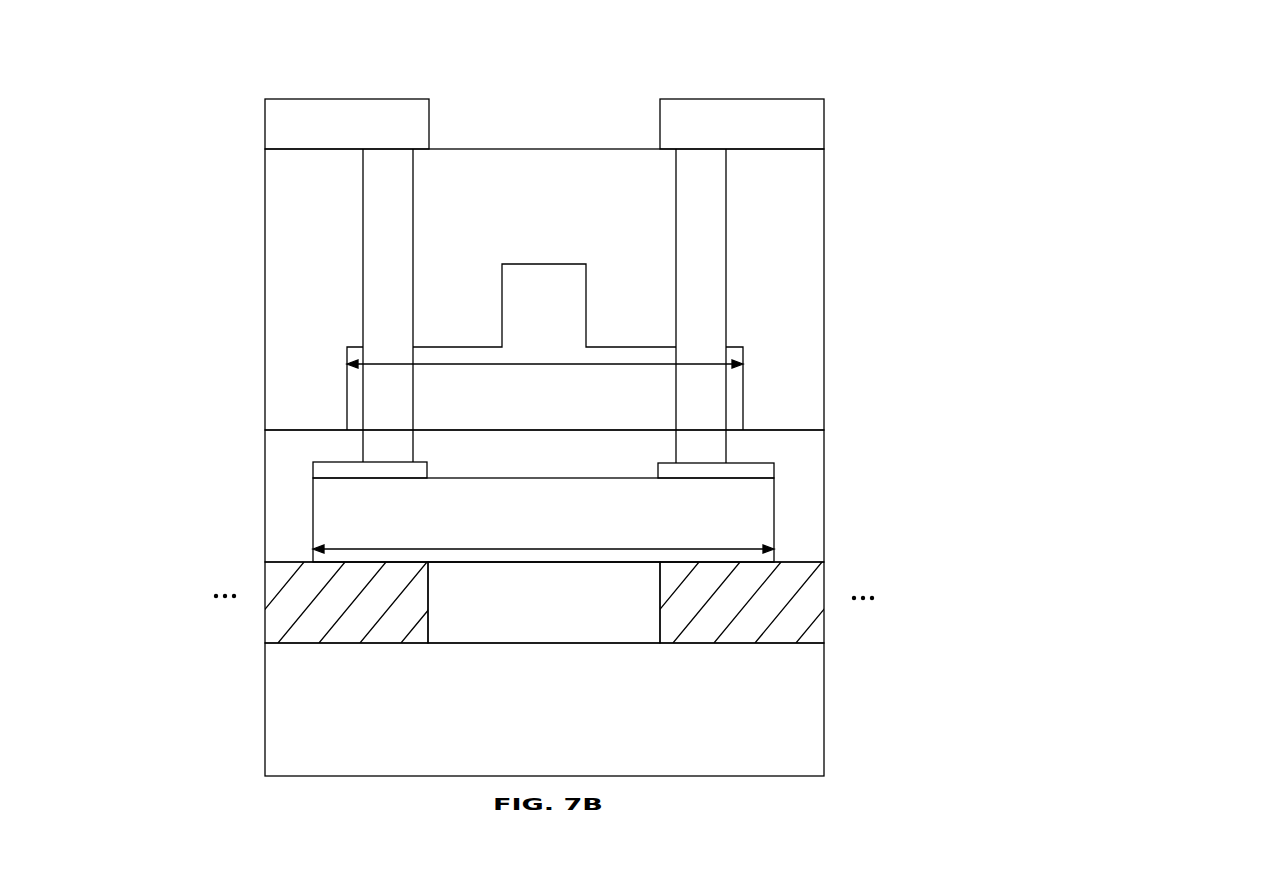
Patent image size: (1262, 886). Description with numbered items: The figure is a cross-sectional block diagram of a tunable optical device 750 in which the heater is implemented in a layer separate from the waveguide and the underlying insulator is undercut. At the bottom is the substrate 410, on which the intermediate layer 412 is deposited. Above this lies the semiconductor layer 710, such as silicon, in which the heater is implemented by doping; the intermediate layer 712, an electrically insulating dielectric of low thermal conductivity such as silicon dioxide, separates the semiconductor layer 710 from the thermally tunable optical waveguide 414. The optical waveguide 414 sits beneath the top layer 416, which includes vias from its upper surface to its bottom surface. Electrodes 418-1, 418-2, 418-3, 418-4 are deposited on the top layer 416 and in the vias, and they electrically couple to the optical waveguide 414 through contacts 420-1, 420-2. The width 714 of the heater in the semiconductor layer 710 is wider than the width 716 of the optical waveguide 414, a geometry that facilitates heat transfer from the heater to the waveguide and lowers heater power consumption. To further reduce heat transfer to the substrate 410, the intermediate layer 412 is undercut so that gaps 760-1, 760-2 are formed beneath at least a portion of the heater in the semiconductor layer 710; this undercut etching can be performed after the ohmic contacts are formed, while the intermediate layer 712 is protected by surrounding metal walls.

The tunable optical device 750 is at (1095, 80).
The top layer 416 is at (535, 226).
The electrode 418-1 is at (727, 118).
The electrode 418-2 is at (700, 245).
The electrode 418-3 is at (364, 118).
The electrode 418-4 is at (388, 245).
The contact 420-1 is at (700, 468).
The contact 420-2 is at (395, 472).
The optical waveguide 414 is at (550, 386).
The width of the optical waveguide 716 is at (610, 366).
The intermediate layer 712 is at (510, 453).
The semiconductor layer 710 is at (530, 538).
The width of the heater 714 is at (662, 548).
The intermediate layer 412 is at (530, 623).
The gap 760-1 is at (353, 603).
The gap 760-2 is at (735, 603).
The substrate 410 is at (532, 730).